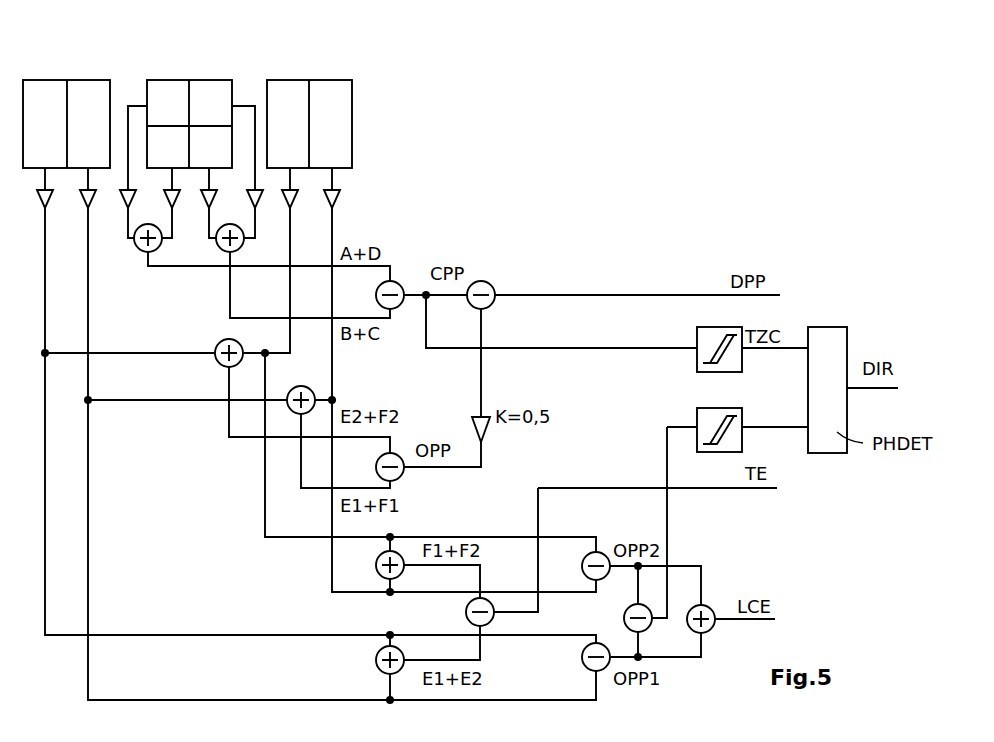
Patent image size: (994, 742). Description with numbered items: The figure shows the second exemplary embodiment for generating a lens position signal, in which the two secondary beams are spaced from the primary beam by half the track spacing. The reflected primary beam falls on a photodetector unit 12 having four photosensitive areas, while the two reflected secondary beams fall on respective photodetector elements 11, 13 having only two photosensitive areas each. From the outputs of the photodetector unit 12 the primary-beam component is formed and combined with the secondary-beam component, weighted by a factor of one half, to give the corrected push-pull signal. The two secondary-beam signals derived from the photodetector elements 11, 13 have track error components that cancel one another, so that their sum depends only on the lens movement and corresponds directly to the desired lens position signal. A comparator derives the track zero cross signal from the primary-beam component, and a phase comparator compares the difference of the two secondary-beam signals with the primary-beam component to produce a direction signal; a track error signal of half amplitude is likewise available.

The photodetector element 11 is at (70, 74).
The photodetector unit 12 is at (192, 74).
The photodetector element 13 is at (314, 74).